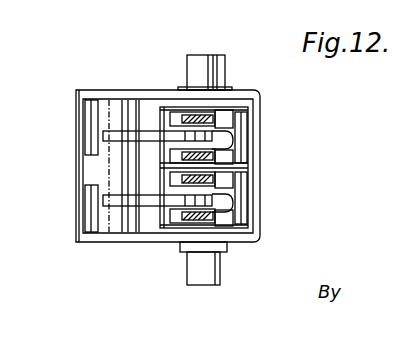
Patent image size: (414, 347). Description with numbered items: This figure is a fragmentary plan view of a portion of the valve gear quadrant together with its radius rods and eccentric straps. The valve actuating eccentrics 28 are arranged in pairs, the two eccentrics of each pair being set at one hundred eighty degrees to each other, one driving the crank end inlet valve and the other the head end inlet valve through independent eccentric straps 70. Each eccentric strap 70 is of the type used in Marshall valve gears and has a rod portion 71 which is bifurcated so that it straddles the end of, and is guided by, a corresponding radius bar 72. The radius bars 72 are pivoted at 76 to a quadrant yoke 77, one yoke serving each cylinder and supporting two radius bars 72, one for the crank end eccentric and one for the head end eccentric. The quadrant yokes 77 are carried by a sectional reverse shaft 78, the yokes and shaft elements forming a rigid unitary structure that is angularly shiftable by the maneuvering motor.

The valve actuating eccentric 28 is at (249, 171).
The eccentric strap 70 is at (259, 188).
The rod portion 71 is at (220, 108).
The radius bar 72 is at (150, 142).
The pivot 76 is at (97, 136).
The quadrant yoke 77 is at (137, 97).
The reverse shaft 78 is at (211, 54).